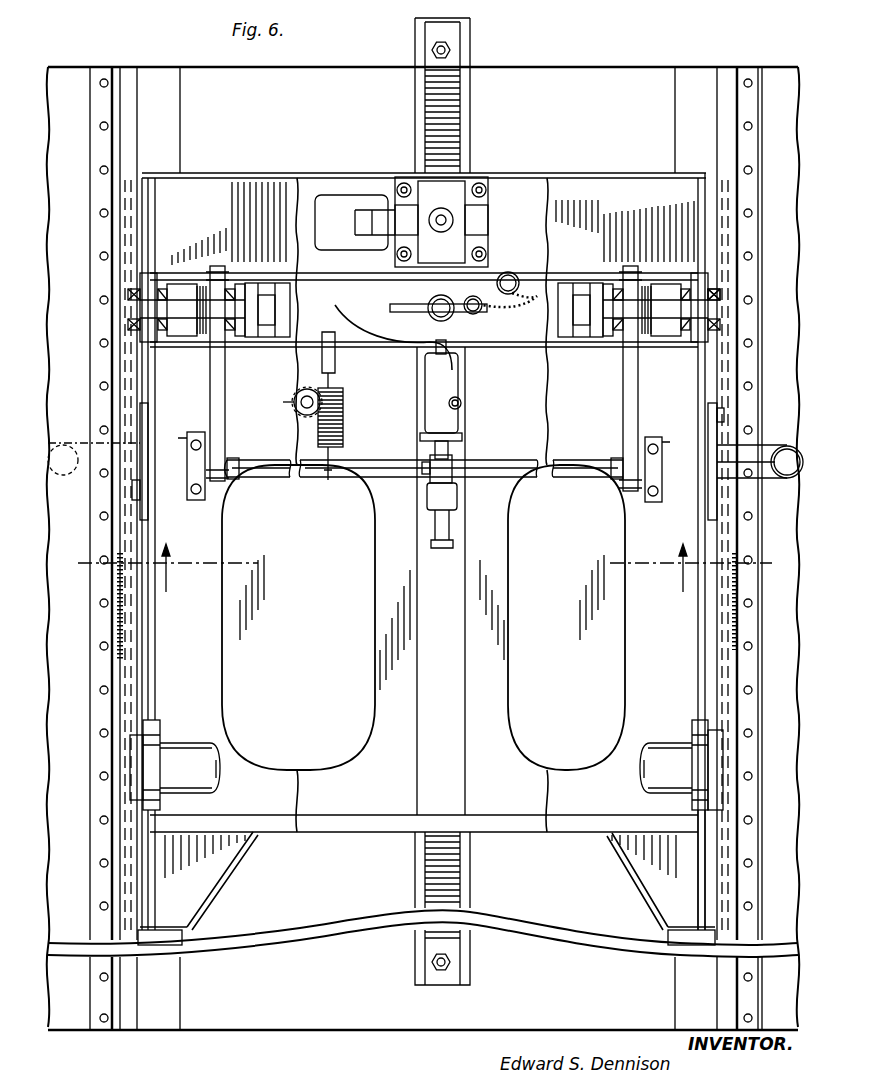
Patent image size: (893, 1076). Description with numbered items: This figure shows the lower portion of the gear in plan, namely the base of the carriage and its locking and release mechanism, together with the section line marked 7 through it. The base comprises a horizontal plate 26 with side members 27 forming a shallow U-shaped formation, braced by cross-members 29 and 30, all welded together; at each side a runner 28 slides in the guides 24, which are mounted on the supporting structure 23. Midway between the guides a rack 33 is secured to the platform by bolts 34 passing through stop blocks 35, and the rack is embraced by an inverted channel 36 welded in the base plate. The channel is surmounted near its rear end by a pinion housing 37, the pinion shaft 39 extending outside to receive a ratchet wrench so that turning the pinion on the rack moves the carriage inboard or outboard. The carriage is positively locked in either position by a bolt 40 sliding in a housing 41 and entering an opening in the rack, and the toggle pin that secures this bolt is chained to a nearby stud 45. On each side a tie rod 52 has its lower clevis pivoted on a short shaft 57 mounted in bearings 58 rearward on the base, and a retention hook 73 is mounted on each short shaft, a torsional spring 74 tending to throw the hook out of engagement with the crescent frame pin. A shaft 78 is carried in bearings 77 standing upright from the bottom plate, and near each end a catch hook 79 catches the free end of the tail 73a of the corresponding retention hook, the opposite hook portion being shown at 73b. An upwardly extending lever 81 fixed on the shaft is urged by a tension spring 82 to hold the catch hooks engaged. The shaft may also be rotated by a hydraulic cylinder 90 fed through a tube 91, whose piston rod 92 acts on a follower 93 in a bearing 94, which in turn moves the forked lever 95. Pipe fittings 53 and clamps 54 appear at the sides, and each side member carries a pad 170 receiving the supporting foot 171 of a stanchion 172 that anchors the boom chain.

The wall panel 23 is at (283, 126).
The guides 24 is at (125, 72).
The horizontal plate 26 is at (545, 188).
The side members 27 is at (150, 586).
The runner 28 is at (145, 906).
The cross-members 29 is at (176, 276).
The cross-member 30 is at (256, 822).
The rack 33 is at (455, 862).
The bolts 34 is at (432, 47).
The stop blocks 35 is at (470, 40).
The inverted channel 36 is at (425, 618).
The pinion housing 37 is at (458, 190).
The shaft 39 is at (357, 208).
The bolt 40 is at (448, 314).
The housing 41 is at (430, 303).
The stud 45 is at (510, 274).
The tie rod 52 is at (720, 295).
The pipe 53 is at (213, 786).
The clamp bracket 54 is at (140, 766).
The short shaft 57 is at (268, 290).
The bearings 58 is at (130, 327).
The retention hook 73 is at (402, 351).
The tail 73a is at (212, 413).
The right link bar portion 73b is at (636, 356).
The torsional spring 74 is at (200, 346).
The bearings 77 is at (194, 490).
The shaft 78 is at (262, 478).
The catch hook 79 is at (236, 480).
The lever 81 is at (333, 482).
The tension spring 82 is at (345, 422).
The hydraulic cylinder 90 is at (460, 415).
The tube 91 is at (350, 346).
The piston rod 92 is at (450, 448).
The follower 93 is at (430, 458).
The bearing 94 is at (460, 497).
The forked lever 95 is at (428, 468).
The pads 170 is at (145, 497).
The supporting foot 171 is at (137, 410).
The stanchion 172 is at (78, 453).
The section line 7- 7 is at (423, 568).